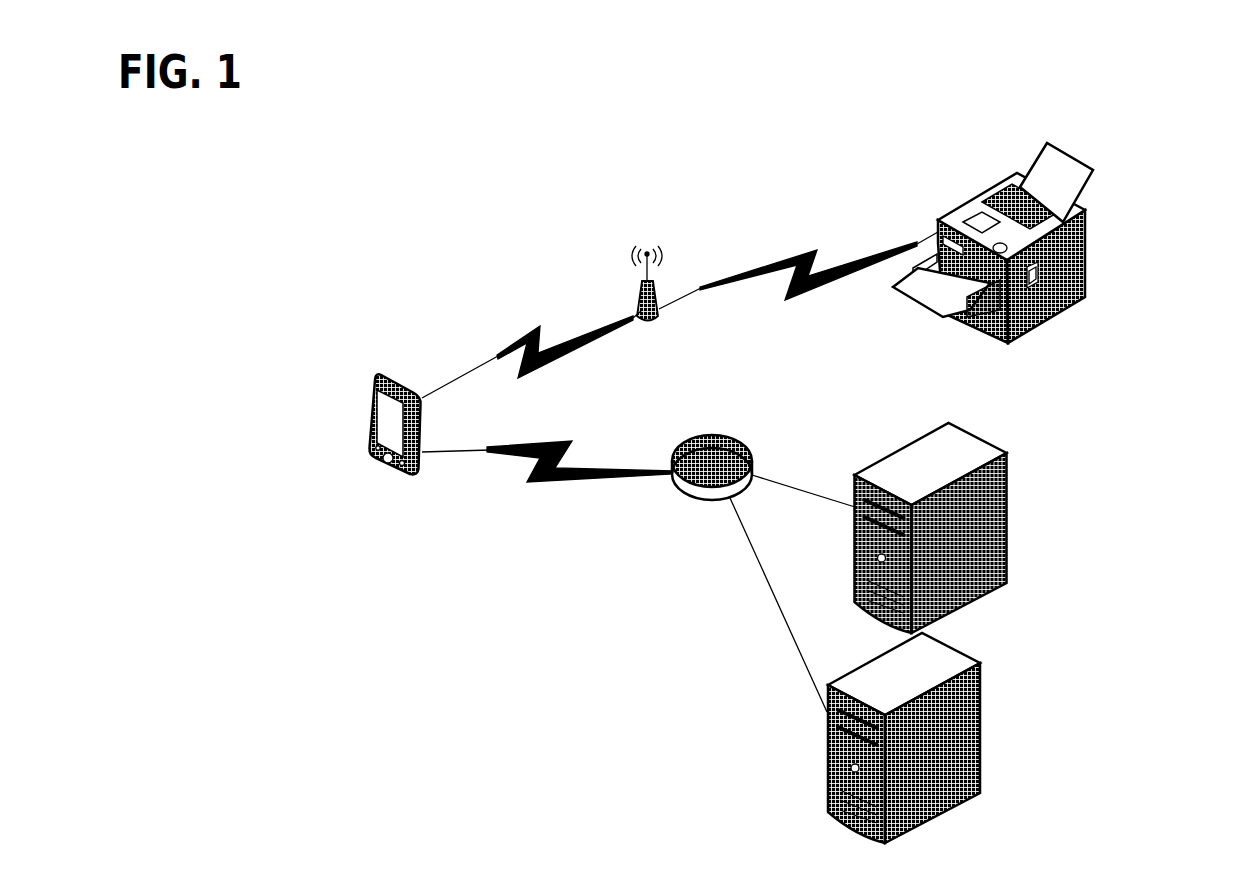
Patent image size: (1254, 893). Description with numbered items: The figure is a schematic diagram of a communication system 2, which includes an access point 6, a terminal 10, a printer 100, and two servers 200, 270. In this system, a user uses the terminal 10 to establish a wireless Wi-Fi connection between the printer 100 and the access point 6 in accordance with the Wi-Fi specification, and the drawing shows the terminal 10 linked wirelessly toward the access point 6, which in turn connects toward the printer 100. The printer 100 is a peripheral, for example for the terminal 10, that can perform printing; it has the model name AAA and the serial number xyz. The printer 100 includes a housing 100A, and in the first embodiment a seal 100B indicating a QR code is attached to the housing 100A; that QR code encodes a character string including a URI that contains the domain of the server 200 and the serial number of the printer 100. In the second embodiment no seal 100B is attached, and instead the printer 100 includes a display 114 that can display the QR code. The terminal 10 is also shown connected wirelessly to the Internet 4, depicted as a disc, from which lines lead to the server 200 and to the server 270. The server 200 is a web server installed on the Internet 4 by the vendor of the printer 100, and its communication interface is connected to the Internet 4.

The communication system 2 is at (474, 227).
The Internet 4 is at (720, 434).
The access point 6 is at (658, 290).
The terminal 10 is at (384, 374).
The printer 100 is at (1015, 220).
The housing 100A is at (1015, 228).
The seal 100B is at (1015, 228).
The display 114 is at (889, 155).
The server 200 is at (1007, 473).
The server 270 is at (982, 683).